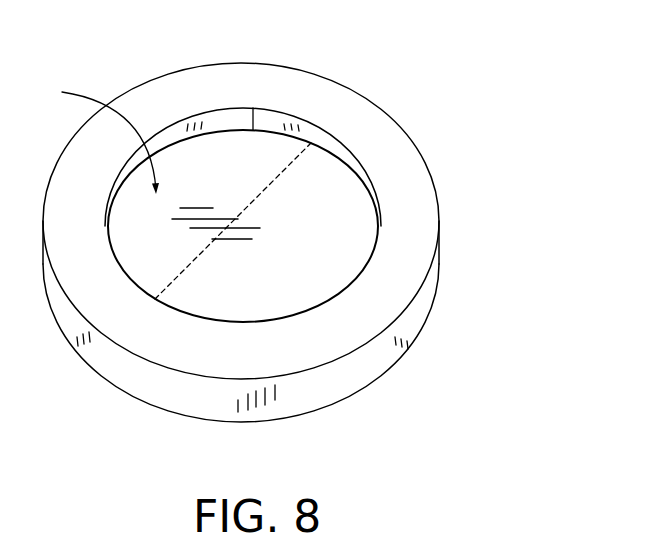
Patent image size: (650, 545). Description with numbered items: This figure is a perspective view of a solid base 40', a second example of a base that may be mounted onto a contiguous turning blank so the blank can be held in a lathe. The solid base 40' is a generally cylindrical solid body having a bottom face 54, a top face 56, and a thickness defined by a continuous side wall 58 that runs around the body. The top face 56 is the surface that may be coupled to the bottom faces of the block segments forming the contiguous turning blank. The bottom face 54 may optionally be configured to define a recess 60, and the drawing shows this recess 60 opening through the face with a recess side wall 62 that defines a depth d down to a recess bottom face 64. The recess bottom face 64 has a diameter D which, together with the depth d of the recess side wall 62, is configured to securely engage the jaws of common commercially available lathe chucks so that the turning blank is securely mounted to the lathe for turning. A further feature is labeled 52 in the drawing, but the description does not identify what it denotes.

The solid base 40' is at (321, 235).
The top surface 52 is at (439, 193).
The bottom face 54 is at (355, 143).
The top face 56 is at (352, 395).
The continuous side wall 58 is at (425, 305).
The recess 60 is at (93, 138).
The recess side wall 62 is at (173, 133).
The recess bottom face 64 is at (338, 222).
The depth d is at (255, 117).
The diameter D is at (215, 242).